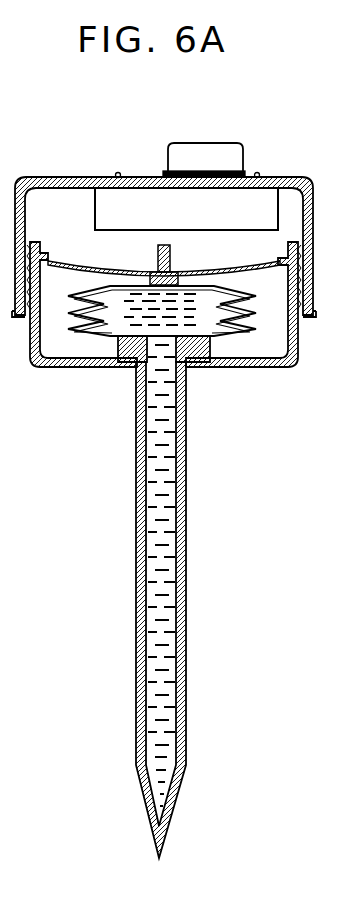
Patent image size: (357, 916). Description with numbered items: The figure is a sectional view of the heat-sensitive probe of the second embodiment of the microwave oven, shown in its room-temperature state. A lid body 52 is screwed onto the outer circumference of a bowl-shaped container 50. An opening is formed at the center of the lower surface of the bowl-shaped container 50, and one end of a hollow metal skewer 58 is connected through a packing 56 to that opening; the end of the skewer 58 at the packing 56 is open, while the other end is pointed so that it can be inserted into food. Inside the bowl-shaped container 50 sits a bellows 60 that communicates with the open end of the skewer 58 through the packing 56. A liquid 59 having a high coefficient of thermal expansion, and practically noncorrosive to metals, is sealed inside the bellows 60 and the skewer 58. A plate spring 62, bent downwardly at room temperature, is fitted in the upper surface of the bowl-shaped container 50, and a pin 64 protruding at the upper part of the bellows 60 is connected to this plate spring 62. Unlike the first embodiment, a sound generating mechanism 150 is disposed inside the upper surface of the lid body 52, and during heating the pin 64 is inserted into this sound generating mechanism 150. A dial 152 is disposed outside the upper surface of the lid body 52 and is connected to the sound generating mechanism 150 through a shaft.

The bowl-shaped container 50 is at (272, 368).
The lid body 52 is at (63, 177).
The packing 56 is at (200, 368).
The metal skewer 58 is at (186, 512).
The liquid 59 is at (152, 559).
The bellows 60 is at (254, 310).
The plate spring 62 is at (238, 271).
The pin 64 is at (158, 252).
The sound generating mechanism 150 is at (147, 192).
The dial 152 is at (205, 143).